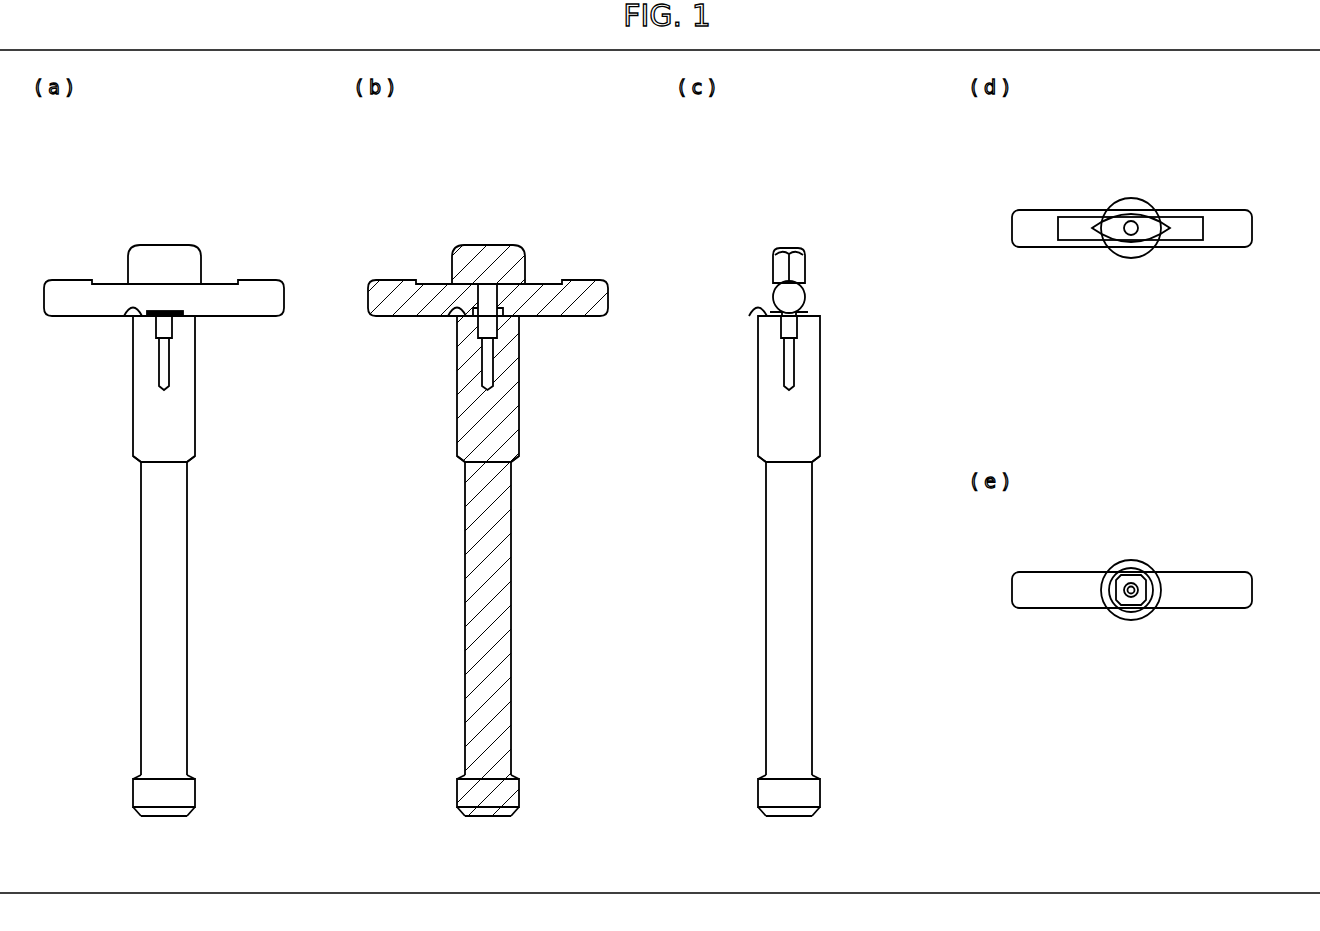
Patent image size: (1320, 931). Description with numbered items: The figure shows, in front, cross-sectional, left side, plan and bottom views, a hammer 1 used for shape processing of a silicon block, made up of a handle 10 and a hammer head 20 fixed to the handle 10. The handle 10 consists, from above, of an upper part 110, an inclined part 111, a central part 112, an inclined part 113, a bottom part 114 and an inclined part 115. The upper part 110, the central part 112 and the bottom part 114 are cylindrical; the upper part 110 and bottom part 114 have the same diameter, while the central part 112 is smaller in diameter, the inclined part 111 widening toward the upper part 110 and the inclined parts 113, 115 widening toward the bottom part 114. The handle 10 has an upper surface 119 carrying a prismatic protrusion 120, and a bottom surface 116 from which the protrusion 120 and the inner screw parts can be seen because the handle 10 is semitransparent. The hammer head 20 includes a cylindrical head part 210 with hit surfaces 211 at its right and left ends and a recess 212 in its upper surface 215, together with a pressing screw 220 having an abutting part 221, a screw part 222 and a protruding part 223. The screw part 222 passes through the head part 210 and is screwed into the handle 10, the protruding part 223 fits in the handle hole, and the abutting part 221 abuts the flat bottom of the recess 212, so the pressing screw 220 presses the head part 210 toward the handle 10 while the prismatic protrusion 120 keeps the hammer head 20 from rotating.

The hammer 1 is at (280, 148).
The handle 10 is at (140, 602).
The hammer head 20 is at (72, 160).
The upper part 110 is at (134, 417).
The inclined part 111 is at (192, 461).
The central part 112 is at (181, 626).
The inclined part 113 is at (190, 776).
The bottom part 114 is at (196, 794).
The inclined part 115 is at (191, 814).
The bottom surface 116 is at (1124, 571).
The upper surface 119 is at (131, 315).
The protrusion 120 is at (182, 312).
The head part 210 is at (109, 280).
The hit surfaces 211 is at (33, 300).
The recess 212 is at (218, 280).
The upper surface 215 is at (70, 280).
The pressing screw 220 is at (150, 243).
The abutting part 221 is at (188, 246).
The screw part 222 is at (174, 328).
The protruding part 223 is at (170, 372).